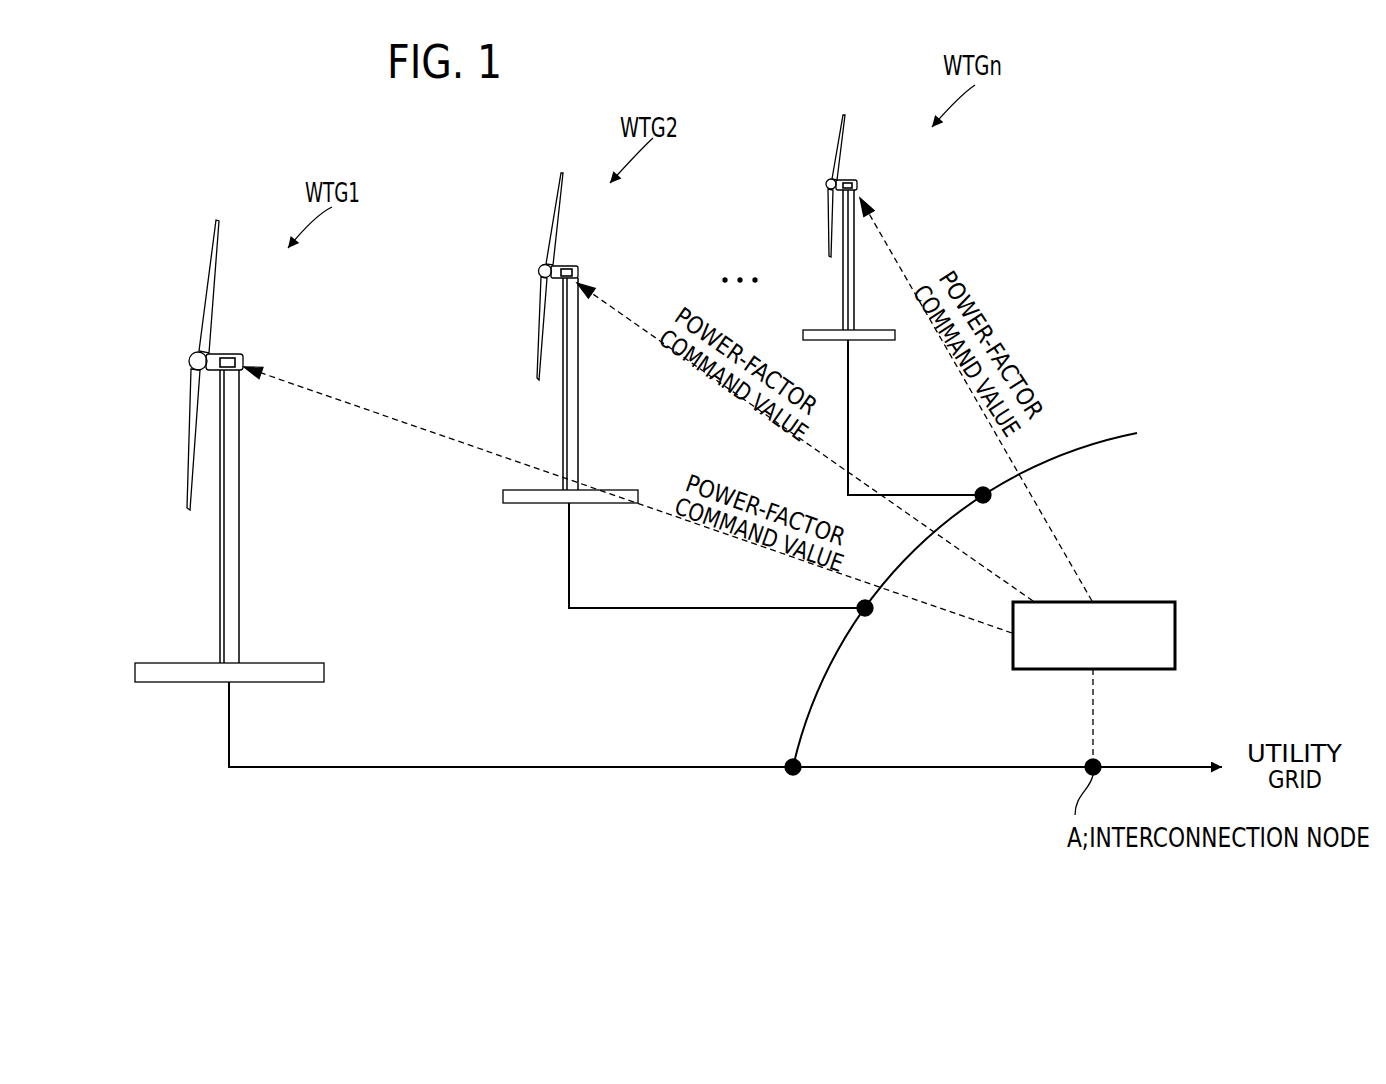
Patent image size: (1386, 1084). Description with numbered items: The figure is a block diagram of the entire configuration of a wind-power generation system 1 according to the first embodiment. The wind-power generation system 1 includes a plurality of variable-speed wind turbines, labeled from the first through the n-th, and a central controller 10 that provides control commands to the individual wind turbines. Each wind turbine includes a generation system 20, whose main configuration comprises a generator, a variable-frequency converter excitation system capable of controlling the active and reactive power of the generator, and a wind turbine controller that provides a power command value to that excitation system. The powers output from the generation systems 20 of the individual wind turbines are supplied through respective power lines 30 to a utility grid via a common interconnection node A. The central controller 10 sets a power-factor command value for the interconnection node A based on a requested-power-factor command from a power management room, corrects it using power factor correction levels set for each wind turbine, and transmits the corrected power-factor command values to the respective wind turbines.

The wind-power generation system 1 is at (1186, 173).
The central controller 10 is at (1176, 634).
The generation system 20 is at (228, 356).
The power line 30 is at (437, 767).